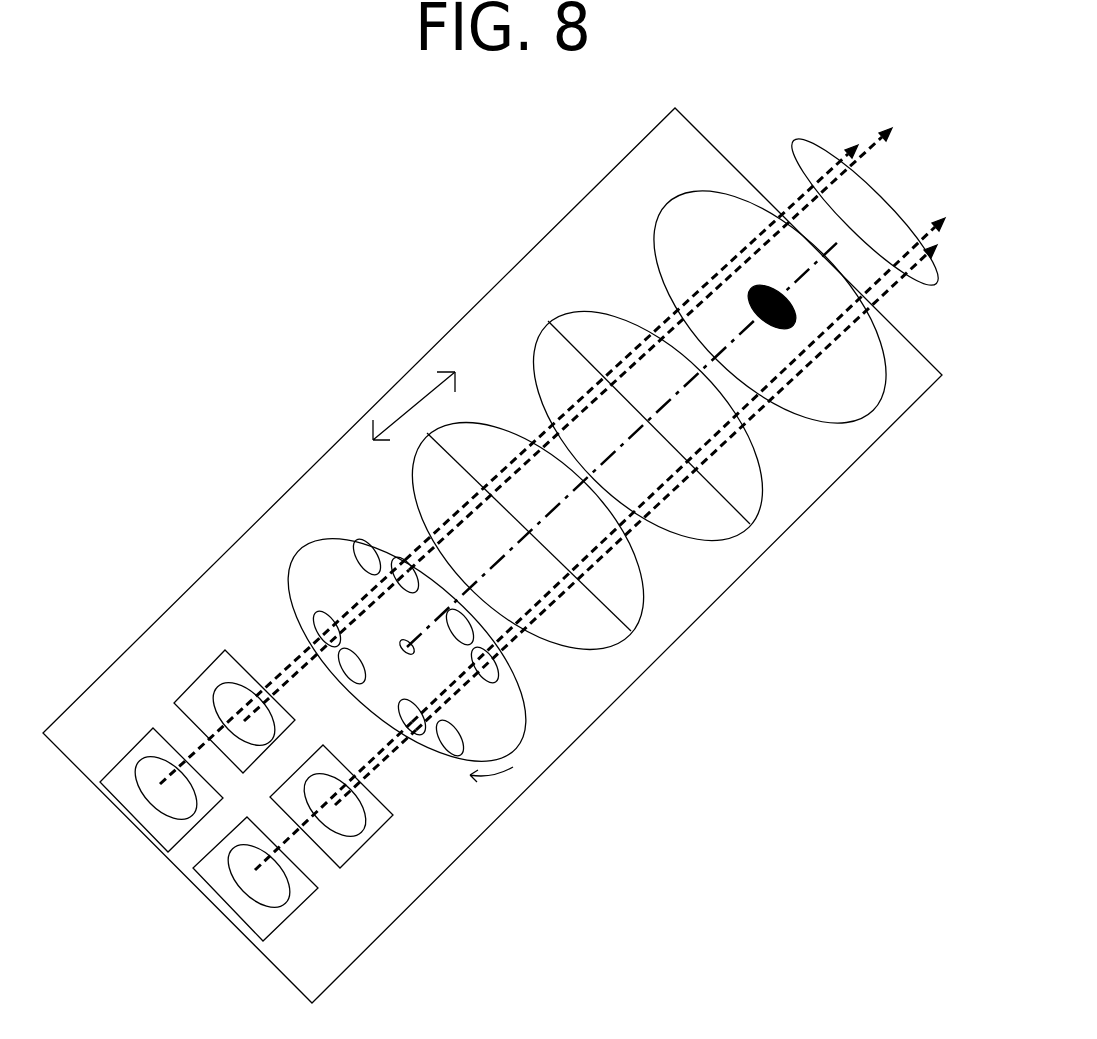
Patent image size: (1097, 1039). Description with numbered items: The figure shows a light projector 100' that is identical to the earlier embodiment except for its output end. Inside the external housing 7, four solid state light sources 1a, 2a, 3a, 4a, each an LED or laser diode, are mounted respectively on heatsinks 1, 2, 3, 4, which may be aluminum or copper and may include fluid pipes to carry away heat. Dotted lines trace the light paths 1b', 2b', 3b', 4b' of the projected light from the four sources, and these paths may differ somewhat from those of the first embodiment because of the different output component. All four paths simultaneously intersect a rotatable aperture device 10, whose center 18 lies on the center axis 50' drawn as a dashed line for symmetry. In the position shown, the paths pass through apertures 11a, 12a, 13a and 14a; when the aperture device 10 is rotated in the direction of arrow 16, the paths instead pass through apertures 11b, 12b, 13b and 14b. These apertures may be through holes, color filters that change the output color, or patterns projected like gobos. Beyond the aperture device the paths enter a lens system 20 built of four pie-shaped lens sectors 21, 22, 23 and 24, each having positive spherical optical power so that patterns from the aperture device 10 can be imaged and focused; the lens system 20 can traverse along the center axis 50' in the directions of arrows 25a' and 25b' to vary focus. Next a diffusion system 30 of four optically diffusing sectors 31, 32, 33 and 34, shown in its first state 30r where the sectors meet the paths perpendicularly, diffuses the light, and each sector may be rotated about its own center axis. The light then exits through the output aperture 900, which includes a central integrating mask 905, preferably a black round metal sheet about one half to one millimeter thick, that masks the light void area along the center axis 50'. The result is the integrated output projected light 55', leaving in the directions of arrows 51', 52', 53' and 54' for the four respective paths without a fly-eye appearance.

The heatsink 1 is at (100, 765).
The light source 1a is at (145, 767).
The light path 1b' is at (282, 672).
The heatsink 2 is at (180, 683).
The light source 2a is at (230, 690).
The light path 2b' is at (326, 645).
The heatsink 3 is at (387, 828).
The light source 3a is at (340, 832).
The light path 3b' is at (394, 767).
The heatsink 4 is at (265, 933).
The light source 4a is at (280, 897).
The light path 4b' is at (333, 793).
The external housing 7 is at (233, 532).
The aperture device 10 is at (345, 528).
The aperture 11a is at (326, 614).
The aperture 11b is at (366, 657).
The aperture 12a is at (410, 594).
The aperture 12b is at (350, 561).
The aperture 13a is at (487, 685).
The aperture 13b is at (447, 624).
The aperture 14a is at (413, 700).
The aperture 14b is at (468, 744).
The arrow 16 is at (489, 782).
The center of filter 18 is at (416, 651).
The lens system 20 is at (482, 422).
The lens sector 21 is at (446, 488).
The lens sector 22 is at (482, 452).
The lens sector 23 is at (606, 580).
The lens sector 24 is at (583, 623).
The arrow 25a' is at (405, 418).
The arrow 25b' is at (463, 372).
The diffusion system 30 is at (589, 307).
The first state of diffusion system 30r is at (555, 307).
The diffusing sector 31 is at (563, 368).
The diffusing sector 32 is at (613, 338).
The diffusing sector 33 is at (740, 469).
The diffusing sector 34 is at (707, 506).
The center axis 50' is at (625, 425).
The arrow 51' is at (634, 326).
The arrow 52' is at (657, 325).
The arrow 53' is at (689, 487).
The arrow 54' is at (679, 448).
The integrated output projected light 55' is at (863, 161).
The light projector 100' is at (492, 555).
The output aperture 900 is at (654, 213).
The central integrating mask 905 is at (775, 333).